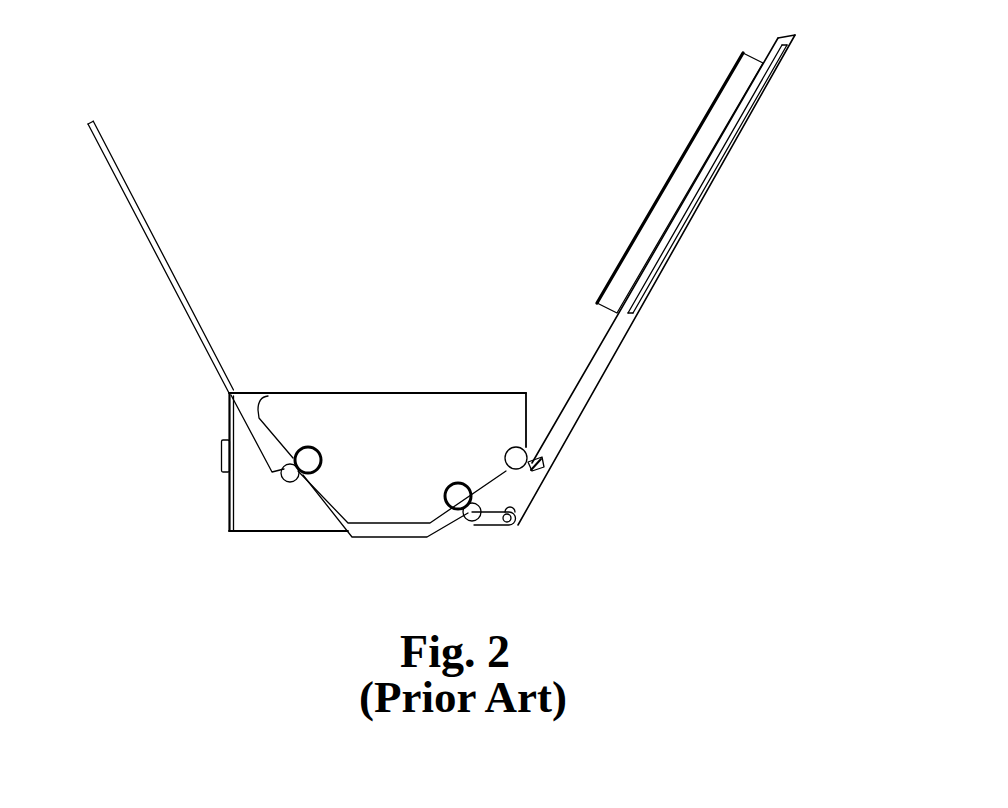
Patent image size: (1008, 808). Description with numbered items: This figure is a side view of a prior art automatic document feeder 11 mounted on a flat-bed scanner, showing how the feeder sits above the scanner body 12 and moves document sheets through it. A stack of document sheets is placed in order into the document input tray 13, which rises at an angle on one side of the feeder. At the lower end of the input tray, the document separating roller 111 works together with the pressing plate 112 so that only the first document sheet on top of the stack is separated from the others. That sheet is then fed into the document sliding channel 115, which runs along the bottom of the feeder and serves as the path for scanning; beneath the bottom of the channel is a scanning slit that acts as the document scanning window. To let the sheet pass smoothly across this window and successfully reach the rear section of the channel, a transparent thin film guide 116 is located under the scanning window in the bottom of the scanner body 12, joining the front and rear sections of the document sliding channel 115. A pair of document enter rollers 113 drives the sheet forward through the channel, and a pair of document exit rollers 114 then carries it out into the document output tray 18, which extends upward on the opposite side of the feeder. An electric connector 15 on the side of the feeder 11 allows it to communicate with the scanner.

The automatic document feeder 11 is at (373, 328).
The scanner body 12 is at (309, 393).
The document input tray 13 is at (725, 177).
The electric connector 15 is at (222, 462).
The document output tray 18 is at (127, 215).
The document separating roller 111 is at (508, 452).
The pressing plate 112 is at (533, 470).
The document enter rollers 113 is at (458, 496).
The document exit rollers 114 is at (308, 460).
The document sliding channel 115 is at (390, 523).
The transparent thin film guide 116 is at (383, 540).